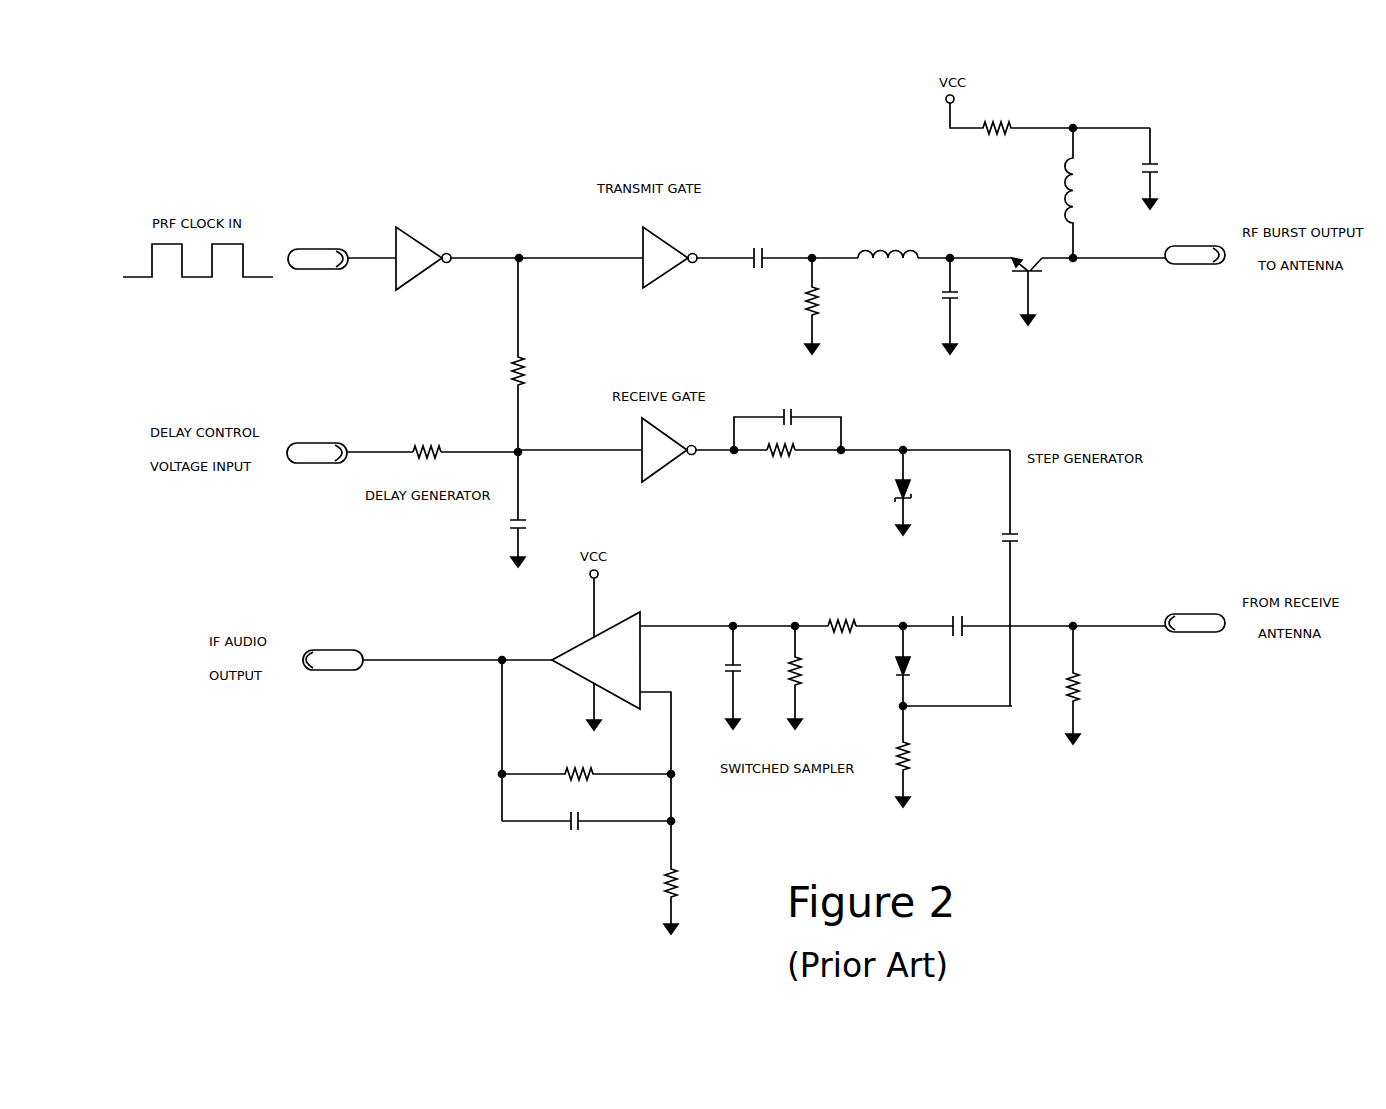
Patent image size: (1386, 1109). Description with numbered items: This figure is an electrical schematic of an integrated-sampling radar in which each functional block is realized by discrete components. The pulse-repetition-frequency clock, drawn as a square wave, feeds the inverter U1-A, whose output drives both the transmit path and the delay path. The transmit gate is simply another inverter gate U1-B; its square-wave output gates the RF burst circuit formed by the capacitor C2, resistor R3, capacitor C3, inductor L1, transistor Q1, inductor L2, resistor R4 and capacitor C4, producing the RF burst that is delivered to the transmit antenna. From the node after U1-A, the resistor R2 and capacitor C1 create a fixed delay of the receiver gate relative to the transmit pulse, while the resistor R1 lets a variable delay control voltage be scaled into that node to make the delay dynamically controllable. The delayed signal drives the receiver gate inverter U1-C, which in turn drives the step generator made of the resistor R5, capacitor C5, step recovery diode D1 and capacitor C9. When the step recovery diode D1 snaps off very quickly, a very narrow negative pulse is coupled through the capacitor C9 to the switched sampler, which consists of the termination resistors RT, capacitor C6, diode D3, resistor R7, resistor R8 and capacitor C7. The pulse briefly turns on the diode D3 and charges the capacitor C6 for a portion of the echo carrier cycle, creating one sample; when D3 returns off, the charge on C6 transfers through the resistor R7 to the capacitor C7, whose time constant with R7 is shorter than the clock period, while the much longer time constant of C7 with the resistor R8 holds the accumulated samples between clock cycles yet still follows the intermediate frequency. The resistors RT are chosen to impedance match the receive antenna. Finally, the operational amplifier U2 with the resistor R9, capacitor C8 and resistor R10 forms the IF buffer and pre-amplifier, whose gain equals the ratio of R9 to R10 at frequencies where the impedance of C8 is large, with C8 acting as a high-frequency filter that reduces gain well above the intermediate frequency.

The inverter U1-A is at (423, 240).
The inverter gate U1-B is at (672, 269).
The receiver gate U1-C is at (671, 461).
The operational amplifier U2 is at (596, 654).
The resistor R1 is at (427, 441).
The resistor R2 is at (503, 355).
The resistor R3 is at (795, 306).
The resistor R4 is at (1050, 117).
The resistor R5 is at (781, 464).
The resistor R7 is at (842, 614).
The resistor R8 is at (809, 677).
The resistor R9 is at (586, 761).
The resistor R10 is at (652, 877).
The termination resistor RT is at (1002, 716).
The capacitor C1 is at (529, 509).
The capacitor C2 is at (756, 243).
The capacitor C3 is at (961, 306).
The capacitor C4 is at (1161, 168).
The capacitor C5 is at (787, 419).
The capacitor C6 is at (954, 611).
The capacitor C7 is at (719, 677).
The capacitor C8 is at (586, 833).
The capacitor C9 is at (1025, 578).
The inductor L1 is at (888, 236).
The inductor L2 is at (1085, 193).
The transistor Q1 is at (1027, 274).
The step recovery diode D1 is at (928, 492).
The sampling diode D3 is at (913, 666).